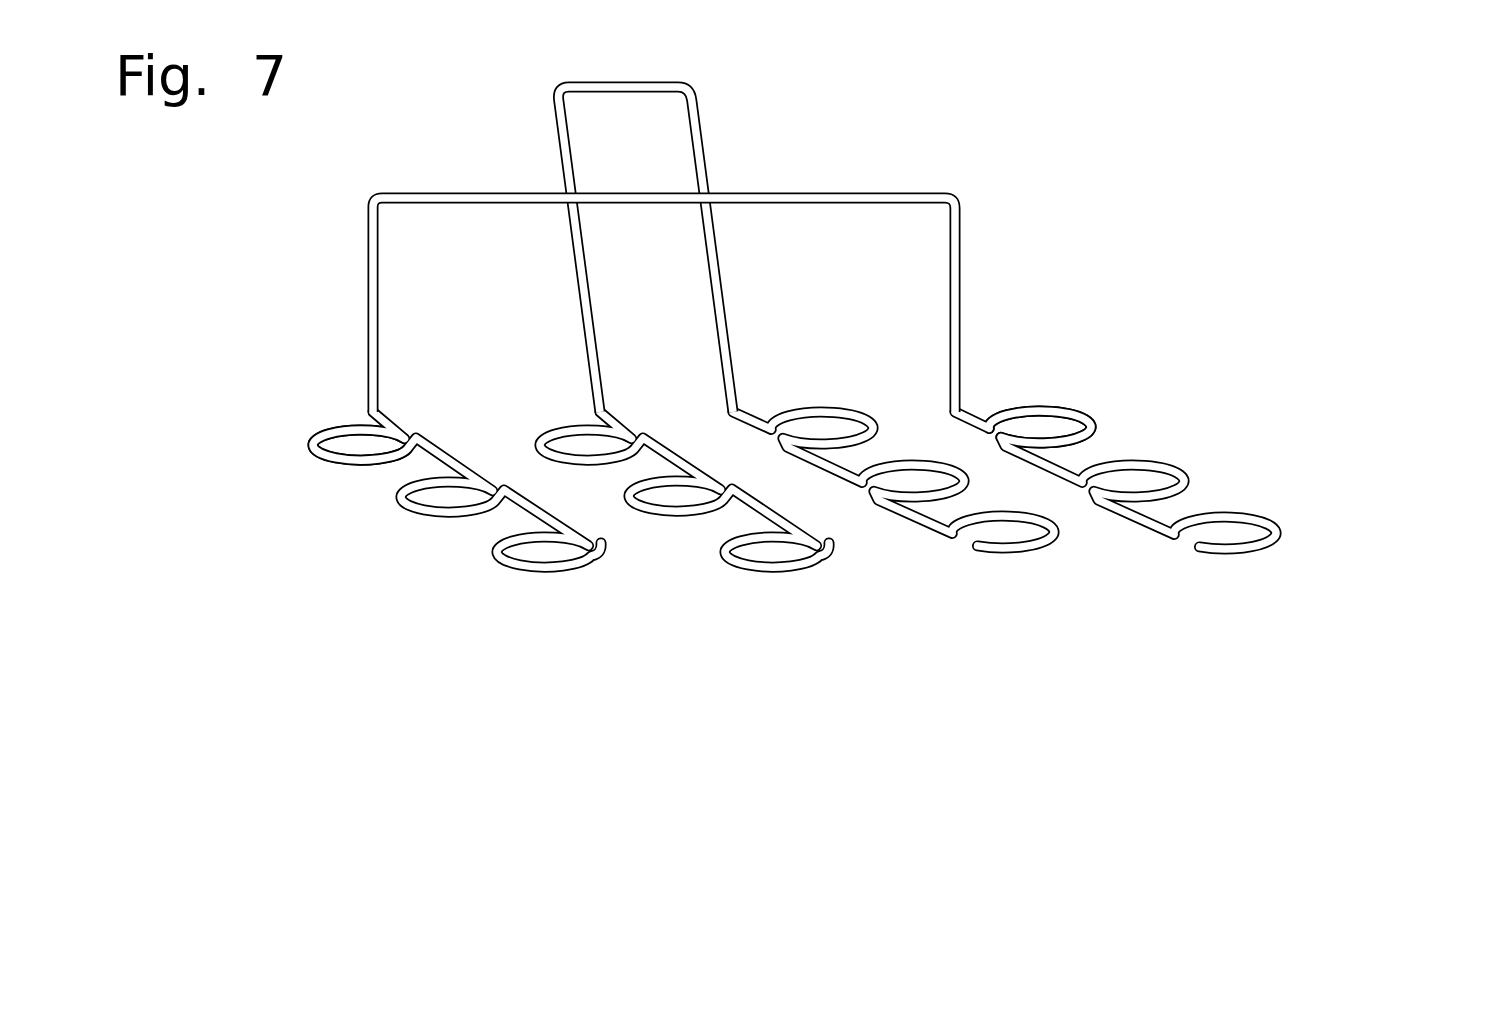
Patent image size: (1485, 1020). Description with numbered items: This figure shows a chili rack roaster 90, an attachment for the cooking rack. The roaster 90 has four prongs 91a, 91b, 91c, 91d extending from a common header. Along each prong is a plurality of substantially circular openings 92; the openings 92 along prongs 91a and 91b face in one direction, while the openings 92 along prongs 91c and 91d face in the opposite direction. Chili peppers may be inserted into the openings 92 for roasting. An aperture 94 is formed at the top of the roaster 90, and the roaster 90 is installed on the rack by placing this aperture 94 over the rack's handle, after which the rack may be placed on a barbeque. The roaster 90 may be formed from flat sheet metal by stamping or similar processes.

The chili rack roaster 90 is at (888, 192).
The prong 91a is at (568, 570).
The prong 91b is at (810, 570).
The prong 91c is at (1043, 548).
The prong 91d is at (1282, 532).
The circular openings 92 is at (360, 443).
The aperture 94 is at (652, 150).